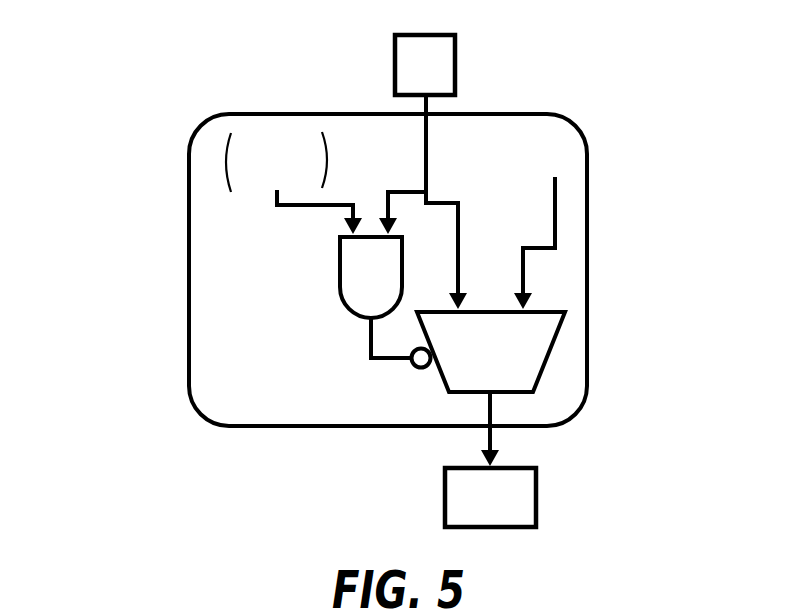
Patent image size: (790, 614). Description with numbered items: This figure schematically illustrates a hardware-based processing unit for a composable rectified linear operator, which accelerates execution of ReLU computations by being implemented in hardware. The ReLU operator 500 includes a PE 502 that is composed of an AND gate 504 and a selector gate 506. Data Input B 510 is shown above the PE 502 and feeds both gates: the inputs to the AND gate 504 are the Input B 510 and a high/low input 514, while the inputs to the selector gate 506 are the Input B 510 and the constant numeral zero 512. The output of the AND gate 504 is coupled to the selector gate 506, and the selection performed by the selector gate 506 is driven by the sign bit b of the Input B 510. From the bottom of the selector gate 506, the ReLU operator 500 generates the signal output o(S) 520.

The ReLU operator 500 is at (374, 276).
The PE 502 is at (197, 408).
The AND gate 504 is at (340, 267).
The selector gate 506 is at (560, 358).
The Input B 510 is at (442, 67).
The numeral 0 512 is at (565, 162).
The high/low input 514 is at (276, 198).
The signal output o(S) 520 is at (540, 493).